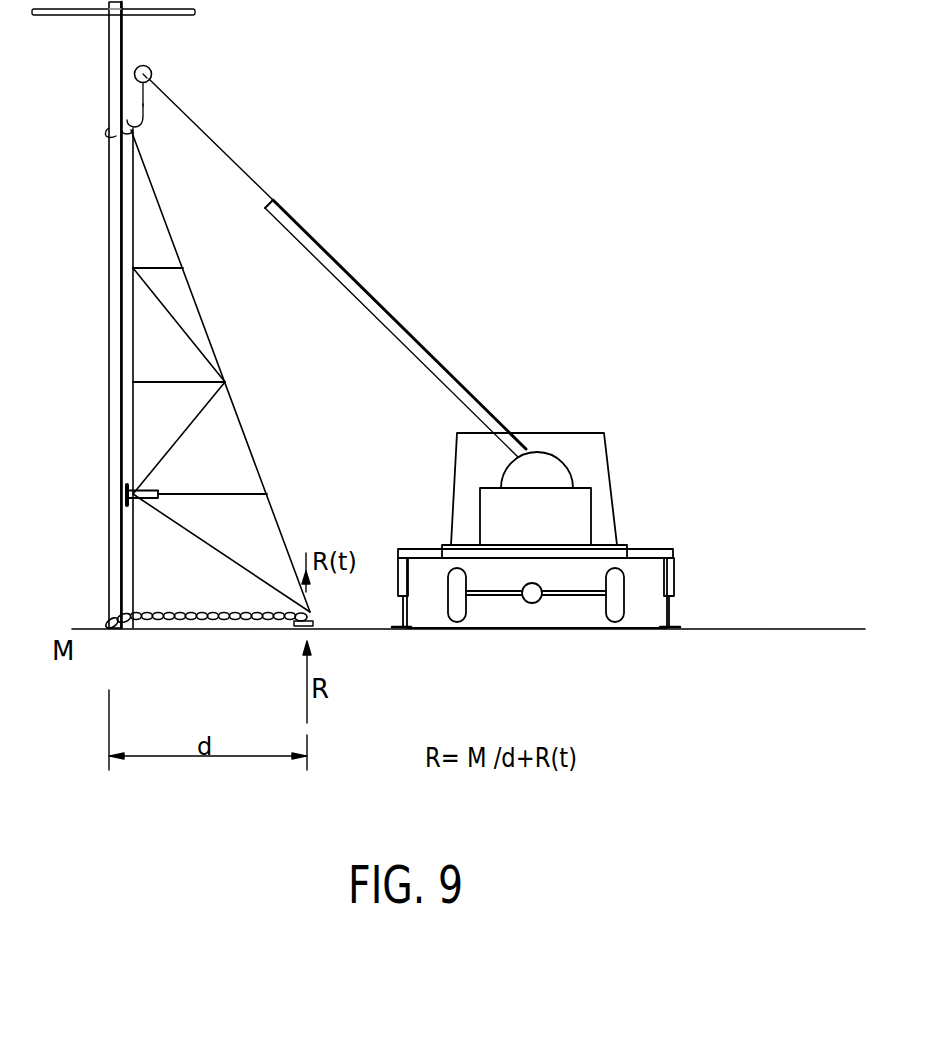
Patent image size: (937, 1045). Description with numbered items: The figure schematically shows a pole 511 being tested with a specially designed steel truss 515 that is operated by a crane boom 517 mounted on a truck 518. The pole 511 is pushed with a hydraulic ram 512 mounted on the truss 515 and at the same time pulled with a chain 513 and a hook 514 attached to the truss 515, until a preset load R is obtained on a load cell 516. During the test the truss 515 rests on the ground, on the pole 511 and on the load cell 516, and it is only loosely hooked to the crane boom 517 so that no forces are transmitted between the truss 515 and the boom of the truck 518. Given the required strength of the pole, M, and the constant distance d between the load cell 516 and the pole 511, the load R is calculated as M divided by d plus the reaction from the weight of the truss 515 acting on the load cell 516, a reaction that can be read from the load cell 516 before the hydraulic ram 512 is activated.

The pole 511 is at (115, 240).
The hydraulic ram 512 is at (150, 491).
The chain 513 is at (78, 644).
The hook 514 is at (112, 133).
The truss 515 is at (243, 430).
The load cell 516 is at (313, 624).
The crane boom 517 is at (370, 301).
The truck 518 is at (600, 478).